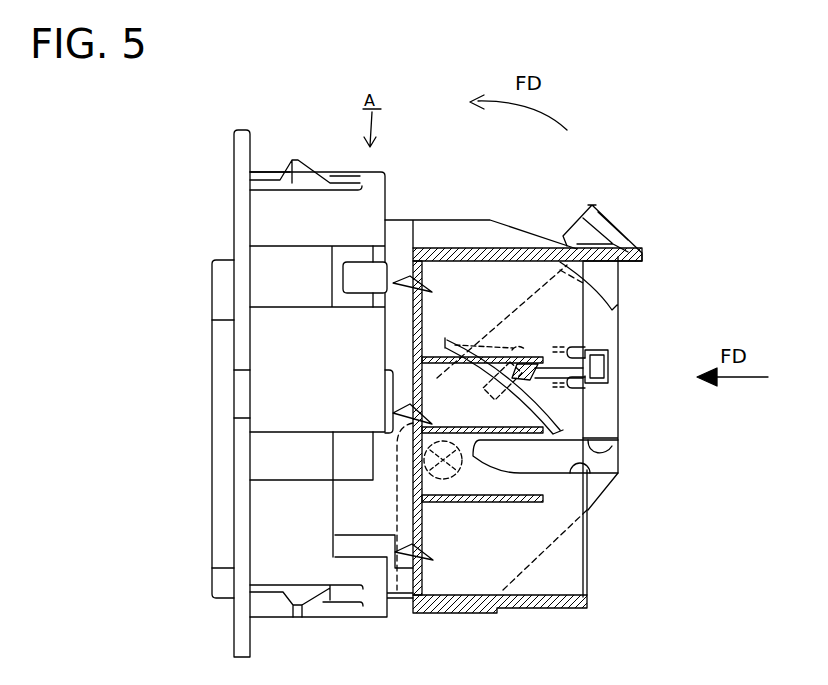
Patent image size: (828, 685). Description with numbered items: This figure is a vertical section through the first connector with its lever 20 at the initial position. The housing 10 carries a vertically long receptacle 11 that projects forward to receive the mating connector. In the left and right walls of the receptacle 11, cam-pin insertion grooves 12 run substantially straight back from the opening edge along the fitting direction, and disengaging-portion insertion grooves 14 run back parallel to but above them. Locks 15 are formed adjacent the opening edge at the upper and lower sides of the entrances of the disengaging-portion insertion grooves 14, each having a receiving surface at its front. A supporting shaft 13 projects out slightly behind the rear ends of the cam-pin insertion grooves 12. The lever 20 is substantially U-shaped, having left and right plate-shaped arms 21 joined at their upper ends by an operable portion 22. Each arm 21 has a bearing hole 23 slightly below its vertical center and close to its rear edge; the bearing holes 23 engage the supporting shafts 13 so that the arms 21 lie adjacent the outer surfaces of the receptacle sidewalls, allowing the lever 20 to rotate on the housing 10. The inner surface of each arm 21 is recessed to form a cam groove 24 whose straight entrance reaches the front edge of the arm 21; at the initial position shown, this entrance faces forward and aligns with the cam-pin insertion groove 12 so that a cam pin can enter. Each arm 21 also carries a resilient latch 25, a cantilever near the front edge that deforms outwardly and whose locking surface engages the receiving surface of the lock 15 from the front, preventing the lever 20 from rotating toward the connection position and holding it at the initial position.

The housing 10 is at (258, 217).
The receptacle 11 is at (523, 602).
The cam-pin insertion grooves 12 is at (588, 473).
The supporting shaft 13 is at (413, 492).
The disengaging-portion insertion grooves 14 is at (556, 375).
The locks 15 is at (572, 350).
The lever 20 is at (618, 195).
The arms 21 is at (547, 550).
The operable portion 22 is at (608, 226).
The bearing hole 23 is at (461, 478).
The cam groove 24 is at (589, 453).
The resilient latch 25 is at (596, 369).